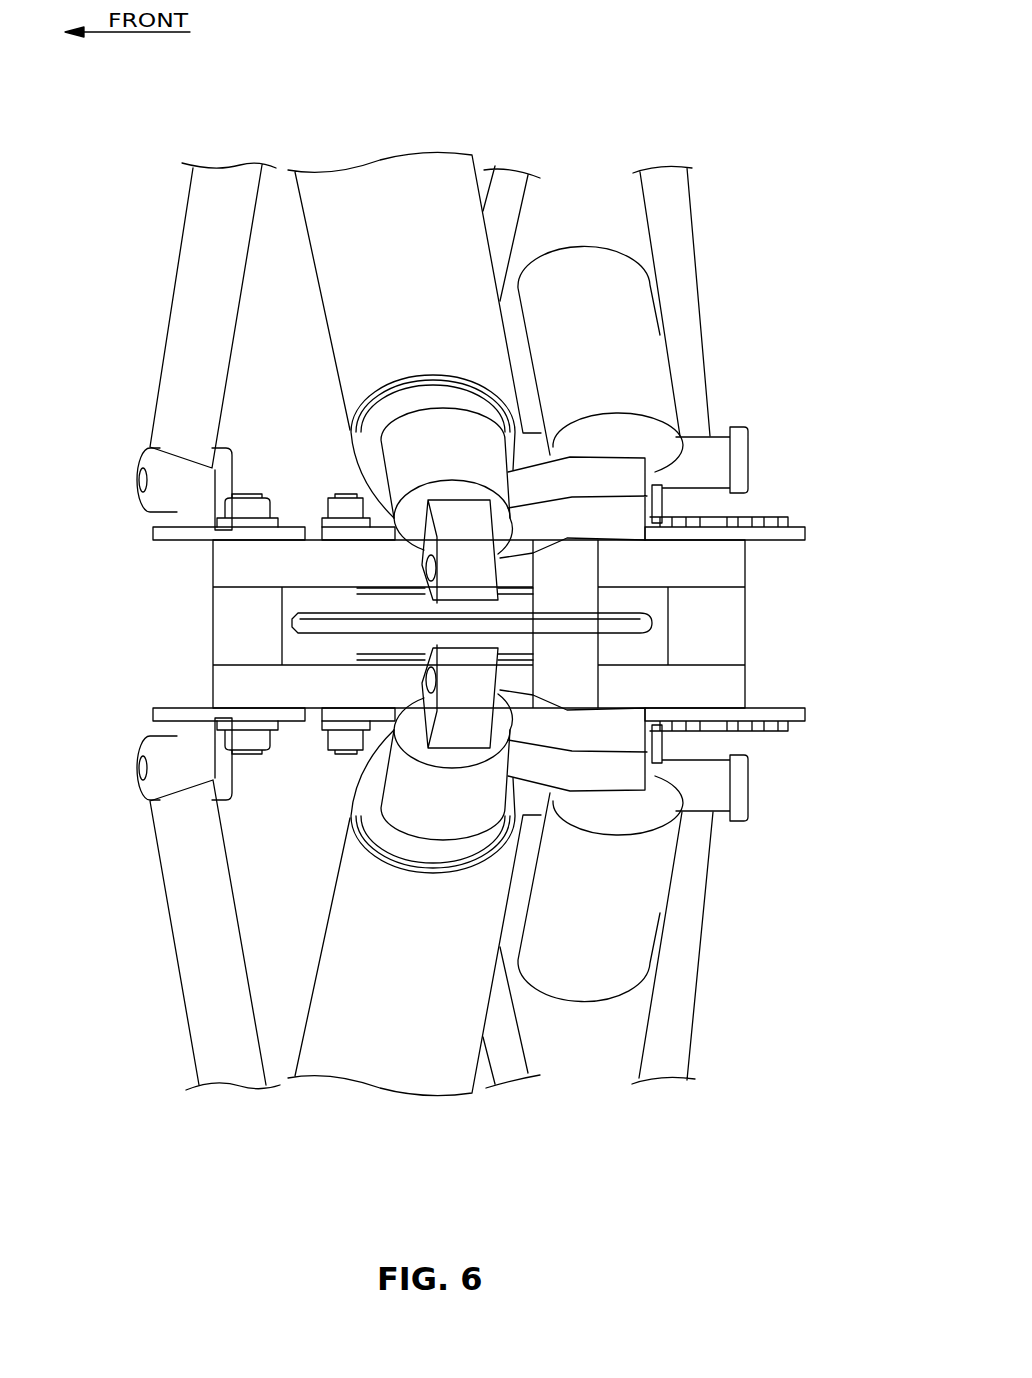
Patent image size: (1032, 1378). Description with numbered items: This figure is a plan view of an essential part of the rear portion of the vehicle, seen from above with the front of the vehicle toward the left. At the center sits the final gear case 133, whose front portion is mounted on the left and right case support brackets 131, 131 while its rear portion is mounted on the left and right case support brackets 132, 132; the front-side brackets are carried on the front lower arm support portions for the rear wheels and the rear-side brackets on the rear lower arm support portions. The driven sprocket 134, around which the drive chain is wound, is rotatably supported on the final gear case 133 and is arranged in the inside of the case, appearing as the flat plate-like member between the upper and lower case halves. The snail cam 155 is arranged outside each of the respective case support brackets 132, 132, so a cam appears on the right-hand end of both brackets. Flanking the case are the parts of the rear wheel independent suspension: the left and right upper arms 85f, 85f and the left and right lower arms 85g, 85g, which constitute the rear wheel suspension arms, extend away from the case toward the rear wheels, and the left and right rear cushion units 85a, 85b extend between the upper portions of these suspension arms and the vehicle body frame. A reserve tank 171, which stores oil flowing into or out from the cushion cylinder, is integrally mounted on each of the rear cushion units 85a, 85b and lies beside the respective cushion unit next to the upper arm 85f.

The case support bracket 131 is at (153, 532).
The case support bracket 132 is at (805, 533).
The final gear case 133 is at (302, 548).
The driven sprocket 134 is at (323, 622).
The snail cam 155 is at (764, 512).
The reserve tank 171 is at (585, 246).
The rear cushion unit 85a is at (397, 1077).
The rear cushion unit 85b is at (392, 182).
The upper arm 85f is at (680, 273).
The lower arm 85g is at (193, 275).